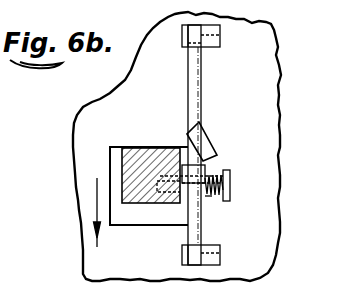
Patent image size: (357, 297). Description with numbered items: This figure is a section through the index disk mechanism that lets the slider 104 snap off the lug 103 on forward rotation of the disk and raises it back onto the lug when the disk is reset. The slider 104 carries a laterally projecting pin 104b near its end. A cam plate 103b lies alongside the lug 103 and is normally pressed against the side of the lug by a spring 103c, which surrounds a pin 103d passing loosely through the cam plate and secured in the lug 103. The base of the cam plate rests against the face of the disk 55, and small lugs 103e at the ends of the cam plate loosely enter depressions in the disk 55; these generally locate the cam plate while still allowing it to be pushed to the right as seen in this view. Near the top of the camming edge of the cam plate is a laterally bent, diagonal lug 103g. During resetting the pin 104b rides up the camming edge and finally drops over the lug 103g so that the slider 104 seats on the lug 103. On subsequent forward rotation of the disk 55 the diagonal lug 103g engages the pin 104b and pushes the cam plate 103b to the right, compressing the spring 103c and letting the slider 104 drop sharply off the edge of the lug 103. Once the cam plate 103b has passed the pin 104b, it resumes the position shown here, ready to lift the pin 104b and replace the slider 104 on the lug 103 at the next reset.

The disk 55 is at (249, 80).
The lug 103 is at (157, 219).
The slider 104 is at (148, 153).
The cam plate 103b is at (191, 106).
The small lugs 103e is at (220, 35).
The laterally bent lug 103g is at (216, 140).
The laterally projecting pin 104b is at (196, 171).
The pin 103d is at (228, 184).
The spring 103c is at (212, 198).